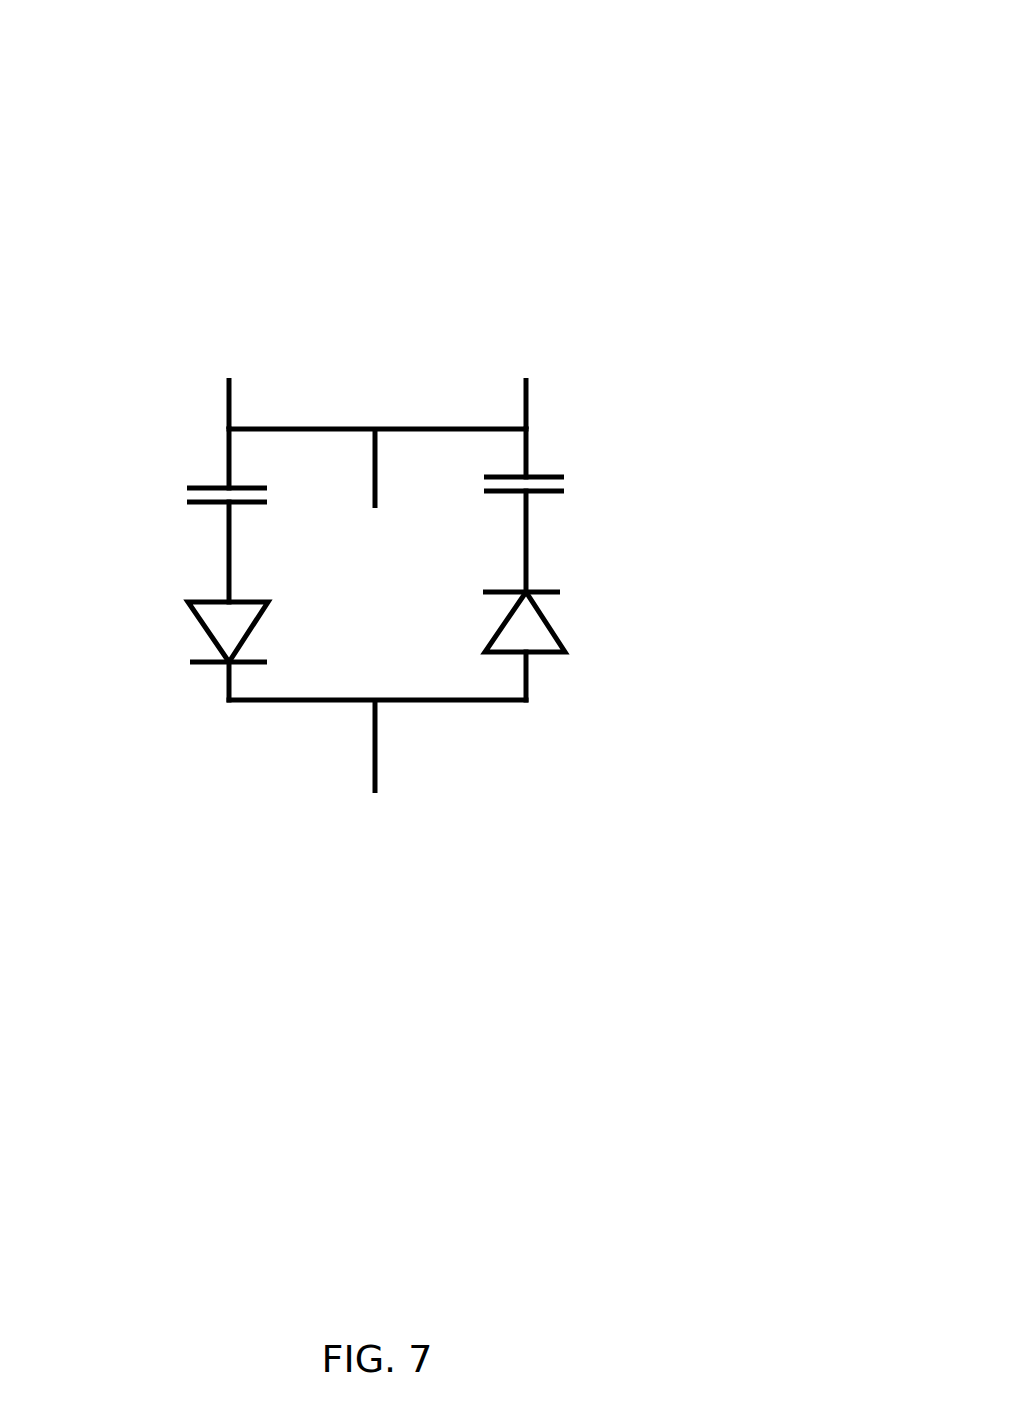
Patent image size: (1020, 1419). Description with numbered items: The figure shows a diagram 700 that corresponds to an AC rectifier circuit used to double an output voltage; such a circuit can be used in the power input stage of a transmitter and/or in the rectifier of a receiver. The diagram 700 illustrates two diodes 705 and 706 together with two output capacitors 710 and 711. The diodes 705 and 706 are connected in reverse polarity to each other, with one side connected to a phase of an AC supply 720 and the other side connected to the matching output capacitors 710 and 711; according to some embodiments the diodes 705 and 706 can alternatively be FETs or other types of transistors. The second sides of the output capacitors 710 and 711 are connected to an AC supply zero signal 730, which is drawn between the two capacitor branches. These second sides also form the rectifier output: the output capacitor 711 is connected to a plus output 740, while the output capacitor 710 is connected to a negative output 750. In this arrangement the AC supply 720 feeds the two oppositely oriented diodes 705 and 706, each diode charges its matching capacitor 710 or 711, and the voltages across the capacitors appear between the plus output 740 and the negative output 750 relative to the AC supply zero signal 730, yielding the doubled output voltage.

The diagram 700 is at (705, 91).
The diode 705 is at (195, 618).
The diode 706 is at (547, 623).
The output capacitor 710 is at (205, 485).
The output capacitor 711 is at (540, 477).
The AC supply 720 is at (375, 784).
The AC supply zero signal 730 is at (375, 518).
The plus output 740 is at (522, 353).
The negative output 750 is at (227, 354).